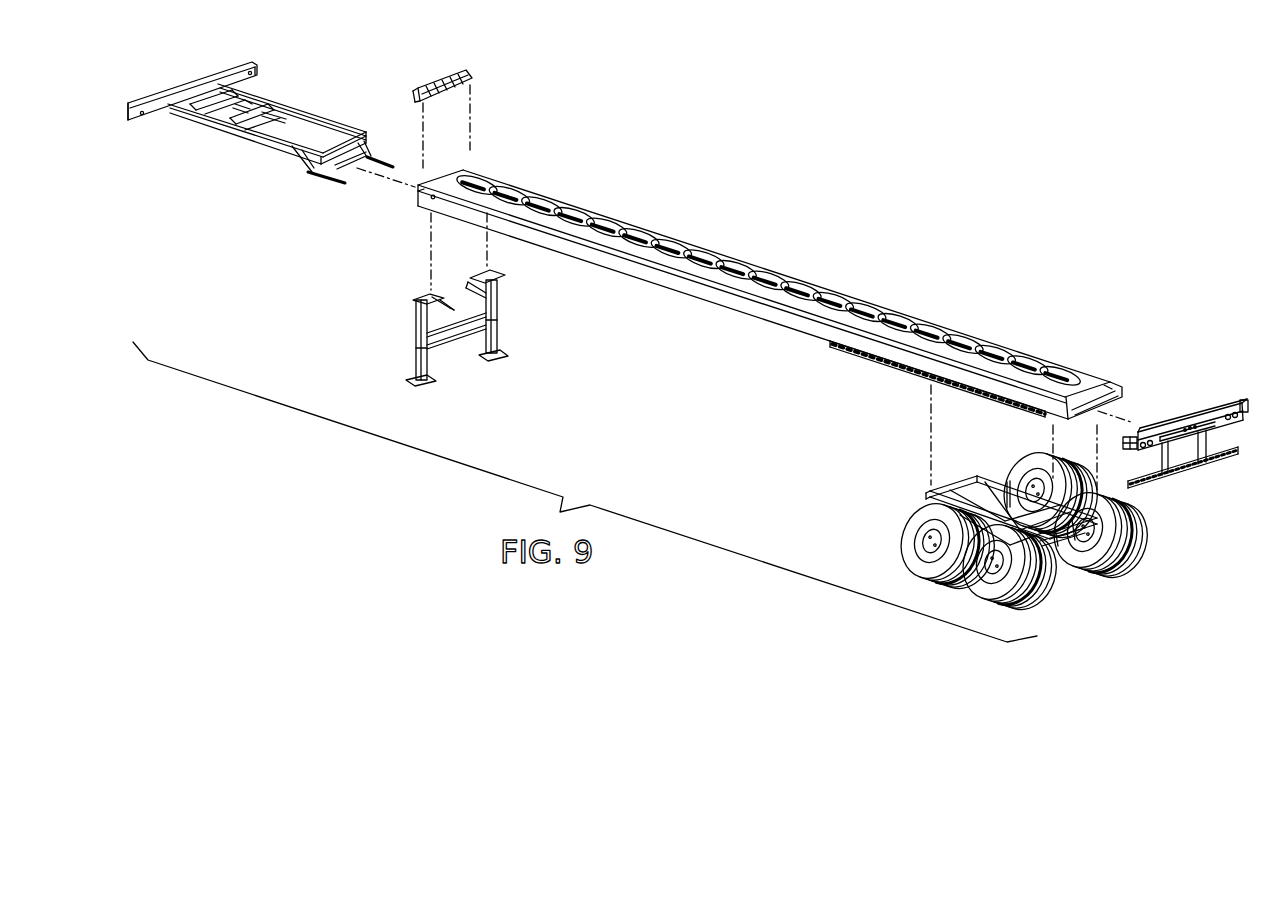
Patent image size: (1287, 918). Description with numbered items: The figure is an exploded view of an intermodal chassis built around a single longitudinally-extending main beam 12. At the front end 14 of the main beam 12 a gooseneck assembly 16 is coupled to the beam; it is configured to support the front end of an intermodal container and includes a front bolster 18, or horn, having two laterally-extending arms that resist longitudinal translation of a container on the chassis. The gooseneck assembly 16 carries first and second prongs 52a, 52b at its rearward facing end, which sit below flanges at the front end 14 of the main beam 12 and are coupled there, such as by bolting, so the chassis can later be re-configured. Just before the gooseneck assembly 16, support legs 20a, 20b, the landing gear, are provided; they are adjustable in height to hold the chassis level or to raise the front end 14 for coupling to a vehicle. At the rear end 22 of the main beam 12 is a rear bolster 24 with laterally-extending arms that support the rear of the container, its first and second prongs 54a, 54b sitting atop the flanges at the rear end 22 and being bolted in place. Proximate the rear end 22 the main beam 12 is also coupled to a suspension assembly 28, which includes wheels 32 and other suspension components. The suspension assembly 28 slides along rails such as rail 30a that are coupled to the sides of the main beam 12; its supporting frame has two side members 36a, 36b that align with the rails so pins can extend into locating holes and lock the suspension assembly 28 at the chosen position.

The main beam 12 is at (757, 272).
The front end 14 is at (474, 165).
The rear end 22 is at (1124, 377).
The gooseneck assembly 16 is at (267, 121).
The front bolster 18 is at (188, 84).
The first prong 52a is at (329, 180).
The second prong 52b is at (377, 163).
The support leg 20a is at (419, 361).
The support leg 20b is at (498, 333).
The rail 30a is at (852, 352).
The suspension assembly 28 is at (1010, 522).
The wheels 32 is at (985, 590).
The side member 36a is at (927, 496).
The side member 36b is at (979, 478).
The rear bolster 24 is at (1185, 415).
The first prong 54a is at (1136, 434).
The second prong 54b is at (1190, 421).